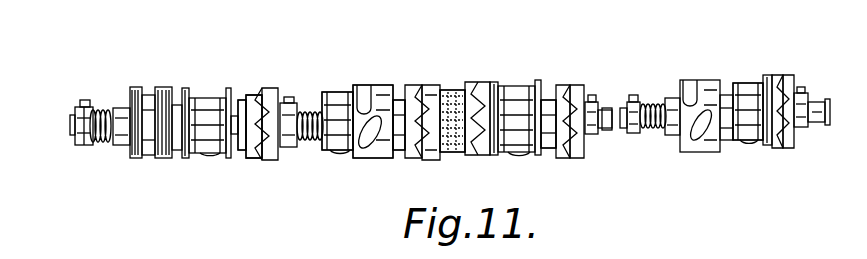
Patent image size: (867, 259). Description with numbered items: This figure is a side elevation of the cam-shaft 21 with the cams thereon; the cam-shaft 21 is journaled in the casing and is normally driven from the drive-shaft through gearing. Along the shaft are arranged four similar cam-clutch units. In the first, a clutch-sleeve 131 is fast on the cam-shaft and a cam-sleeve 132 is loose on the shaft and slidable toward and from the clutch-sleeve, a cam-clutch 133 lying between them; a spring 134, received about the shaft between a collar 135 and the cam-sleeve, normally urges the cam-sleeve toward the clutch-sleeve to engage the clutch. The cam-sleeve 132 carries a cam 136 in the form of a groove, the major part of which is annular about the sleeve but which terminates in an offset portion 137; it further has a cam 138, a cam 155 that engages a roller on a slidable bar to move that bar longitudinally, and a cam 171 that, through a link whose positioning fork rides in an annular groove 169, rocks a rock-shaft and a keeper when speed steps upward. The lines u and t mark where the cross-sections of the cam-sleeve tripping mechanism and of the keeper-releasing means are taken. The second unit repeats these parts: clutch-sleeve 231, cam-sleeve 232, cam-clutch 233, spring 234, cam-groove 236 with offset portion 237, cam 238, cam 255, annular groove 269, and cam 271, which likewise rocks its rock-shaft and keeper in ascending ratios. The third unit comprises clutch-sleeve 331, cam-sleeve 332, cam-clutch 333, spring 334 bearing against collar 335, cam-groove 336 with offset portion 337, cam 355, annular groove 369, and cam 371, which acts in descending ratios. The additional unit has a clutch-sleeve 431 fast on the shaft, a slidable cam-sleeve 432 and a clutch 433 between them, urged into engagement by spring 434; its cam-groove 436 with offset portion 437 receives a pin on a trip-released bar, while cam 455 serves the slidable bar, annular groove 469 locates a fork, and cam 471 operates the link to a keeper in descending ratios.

The cam-shaft 21 is at (72, 114).
The clutch-sleeve 131 is at (285, 102).
The cam-sleeve 132 is at (166, 88).
The cam-clutch 133 is at (262, 95).
The spring 134 is at (100, 118).
The collar 135 is at (83, 145).
The cam 136 is at (145, 95).
The offset portion 137 is at (160, 158).
The cam 138 is at (178, 150).
The cam 155 is at (206, 155).
The annular groove 169 is at (233, 100).
The cam 171 is at (243, 158).
The section line u— u is at (176, 75).
The section line t— t is at (241, 74).
The clutch-sleeve 231 is at (590, 101).
The cam-sleeve 232 is at (510, 85).
The cam-clutch 233 is at (566, 88).
The spring 234 is at (470, 90).
The cam 236 is at (452, 90).
The offset portion 237 is at (455, 152).
The cam 238 is at (483, 152).
The cam 255 is at (518, 152).
The annular groove 269 is at (548, 100).
The cam 271 is at (550, 152).
The clutch-sleeve 331 is at (800, 93).
The cam-sleeve 332 is at (744, 79).
The cam-clutch 333 is at (784, 80).
The spring 334 is at (652, 128).
The collar 335 is at (632, 134).
The cam 336 is at (690, 83).
The offset portion 337 is at (693, 152).
The cam 355 is at (762, 145).
The annular groove 369 is at (721, 95).
The cam 371 is at (728, 142).
The clutch-sleeve 431 is at (425, 85).
The cam-sleeve 432 is at (380, 85).
The cam-clutch 433 is at (418, 85).
The spring 434 is at (283, 240).
The cam 436 is at (357, 90).
The offset portion 437 is at (350, 160).
The cam 455 is at (340, 153).
The annular groove 469 is at (400, 100).
The cam 471 is at (403, 150).